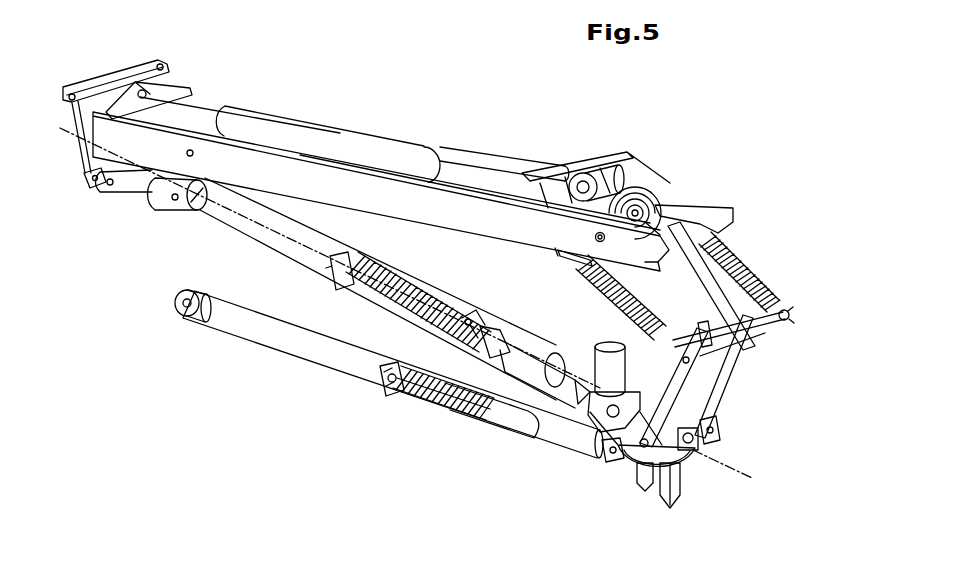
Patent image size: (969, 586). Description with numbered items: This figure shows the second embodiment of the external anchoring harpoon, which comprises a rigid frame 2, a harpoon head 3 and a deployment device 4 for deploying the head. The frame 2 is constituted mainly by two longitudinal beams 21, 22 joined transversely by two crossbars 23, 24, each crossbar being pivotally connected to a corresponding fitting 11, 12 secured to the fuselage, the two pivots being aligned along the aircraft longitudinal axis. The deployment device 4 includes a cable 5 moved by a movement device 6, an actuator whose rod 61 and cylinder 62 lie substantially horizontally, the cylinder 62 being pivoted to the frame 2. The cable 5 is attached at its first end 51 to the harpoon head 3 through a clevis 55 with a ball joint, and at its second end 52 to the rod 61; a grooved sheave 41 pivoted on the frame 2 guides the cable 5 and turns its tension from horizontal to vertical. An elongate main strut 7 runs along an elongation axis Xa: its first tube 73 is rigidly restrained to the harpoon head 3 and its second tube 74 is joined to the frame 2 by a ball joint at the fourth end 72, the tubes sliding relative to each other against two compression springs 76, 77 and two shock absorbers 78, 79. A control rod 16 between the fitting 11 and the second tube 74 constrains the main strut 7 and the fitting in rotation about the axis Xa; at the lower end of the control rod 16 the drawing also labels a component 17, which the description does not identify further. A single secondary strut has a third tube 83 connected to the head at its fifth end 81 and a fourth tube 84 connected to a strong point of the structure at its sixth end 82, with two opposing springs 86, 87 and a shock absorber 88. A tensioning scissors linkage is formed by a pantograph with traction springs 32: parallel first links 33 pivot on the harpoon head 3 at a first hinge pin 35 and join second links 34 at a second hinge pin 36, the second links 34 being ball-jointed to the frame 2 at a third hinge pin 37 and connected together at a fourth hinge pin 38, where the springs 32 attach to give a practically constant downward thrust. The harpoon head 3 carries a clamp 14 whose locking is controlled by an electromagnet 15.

The frame 2 is at (237, 96).
The harpoon head 3 is at (628, 472).
The deployment device 4 is at (706, 263).
The cable 5 is at (648, 188).
The movement device 6 is at (392, 121).
The main strut 7 is at (330, 268).
The fitting 11 is at (138, 66).
The fitting 12 is at (606, 148).
The clamp 14 is at (677, 492).
The control means 15 is at (605, 346).
The control rod 16 is at (72, 160).
The block 17 is at (118, 190).
The longitudinal beam 21 is at (268, 107).
The longitudinal beam 22 is at (283, 135).
The crossbar 23 is at (160, 66).
The crossbar 24 is at (618, 165).
The traction spring 32 is at (590, 288).
The first link 33 is at (667, 402).
The second link 34 is at (636, 278).
The first hinge pin 35 is at (652, 492).
The second hinge pin 36 is at (728, 366).
The third hinge pin 37 is at (594, 237).
The fourth hinge pin 38 is at (776, 305).
The sheave 41 is at (648, 200).
The first end 51 is at (717, 425).
The second end 52 is at (573, 172).
The clevis 55 is at (693, 456).
The rod 61 is at (482, 170).
The cylinder 62 is at (382, 150).
The fourth end 72 is at (150, 196).
The first tube 73 is at (563, 355).
The second tube 74 is at (205, 210).
The first resilient means 76 is at (378, 270).
The first resilient means 77 is at (460, 310).
The shock absorber 78 is at (344, 262).
The shock absorber 79 is at (488, 332).
The fifth end 81 is at (604, 452).
The sixth end 82 is at (176, 306).
The third tube 83 is at (558, 445).
The fourth tube 84 is at (304, 355).
The second resilient means 86 is at (420, 400).
The second resilient means 87 is at (465, 414).
The shock absorber 88 is at (380, 386).
The elongation axis Xa is at (296, 292).